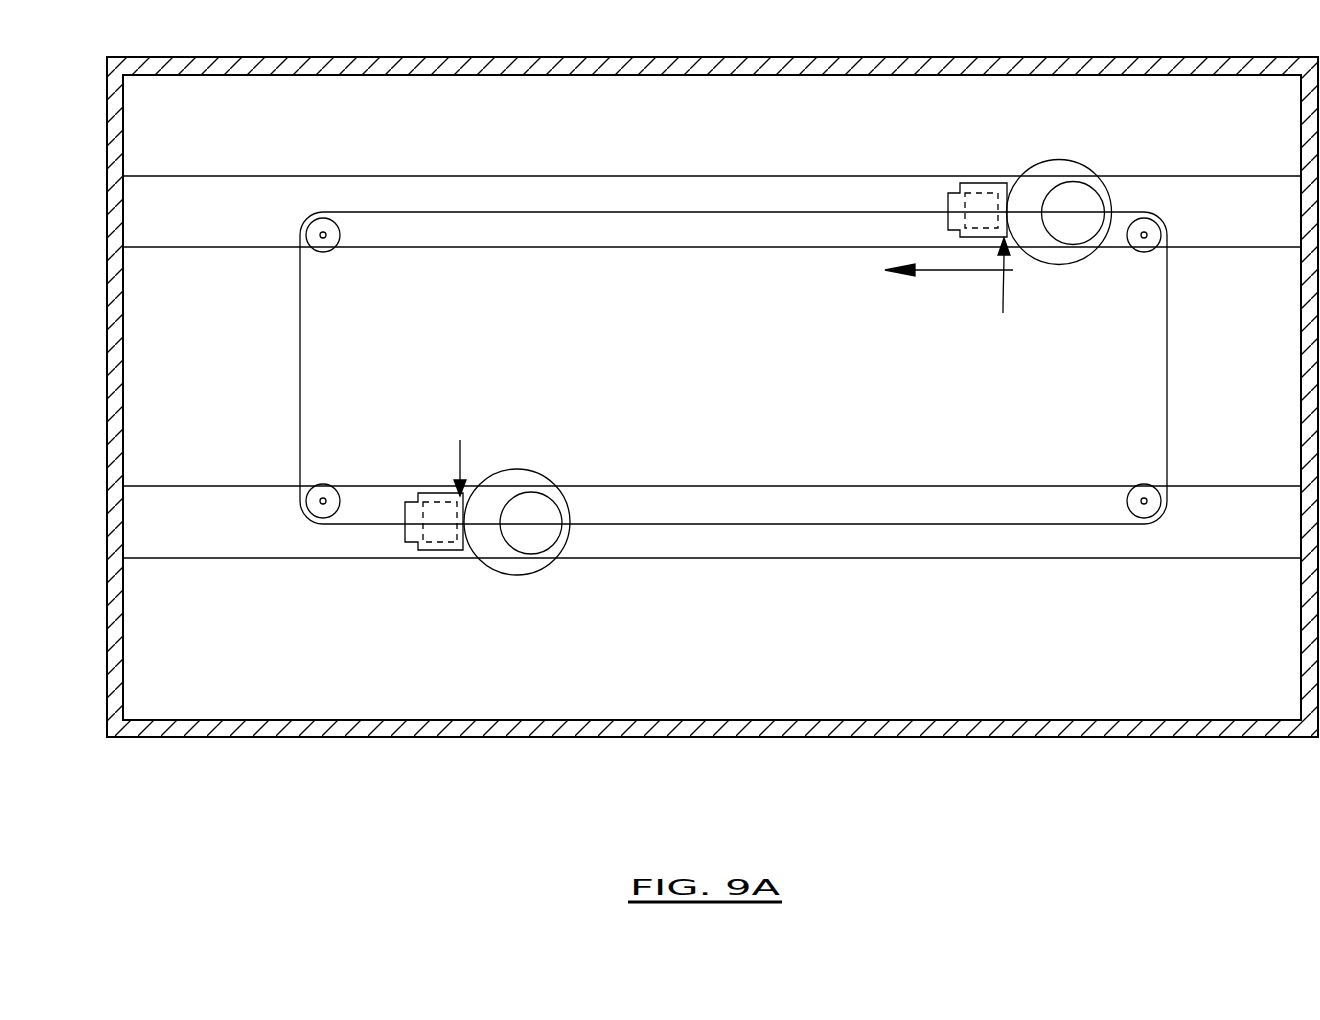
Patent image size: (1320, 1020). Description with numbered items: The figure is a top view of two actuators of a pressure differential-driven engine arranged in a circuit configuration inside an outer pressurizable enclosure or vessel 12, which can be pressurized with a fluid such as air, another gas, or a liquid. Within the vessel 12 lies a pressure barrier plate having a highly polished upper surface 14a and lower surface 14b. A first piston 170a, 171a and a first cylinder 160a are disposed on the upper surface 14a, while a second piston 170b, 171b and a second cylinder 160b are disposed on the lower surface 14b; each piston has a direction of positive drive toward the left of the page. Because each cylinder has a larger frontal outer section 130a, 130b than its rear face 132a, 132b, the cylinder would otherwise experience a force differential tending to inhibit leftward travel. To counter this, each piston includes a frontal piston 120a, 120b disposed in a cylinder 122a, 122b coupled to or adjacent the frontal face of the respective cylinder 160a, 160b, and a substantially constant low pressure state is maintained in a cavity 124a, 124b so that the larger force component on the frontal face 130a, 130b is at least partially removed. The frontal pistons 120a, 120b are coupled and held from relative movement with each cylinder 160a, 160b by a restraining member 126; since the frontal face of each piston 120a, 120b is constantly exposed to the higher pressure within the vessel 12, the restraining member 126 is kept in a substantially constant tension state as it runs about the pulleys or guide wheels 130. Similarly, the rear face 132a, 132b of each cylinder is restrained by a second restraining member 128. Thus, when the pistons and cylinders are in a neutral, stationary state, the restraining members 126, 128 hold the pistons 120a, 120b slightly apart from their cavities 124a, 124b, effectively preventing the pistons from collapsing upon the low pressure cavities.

The pressurizable enclosure or vessel 12 is at (200, 737).
The upper surface of the pressure barrier plate 14a is at (160, 176).
The lower surface of the pressure barrier plate 14b is at (148, 486).
The first frontal piston 120a is at (917, 216).
The second frontal piston 120b is at (387, 526).
The first cylinder of the frontal piston 122a is at (974, 183).
The second cylinder of the frontal piston 122b is at (422, 493).
The first low pressure cavity 124a is at (990, 290).
The second low pressure cavity 124b is at (484, 450).
The restraining member 126 is at (662, 212).
The restraining member 128 is at (773, 524).
The pulleys or guide wheels 130 is at (335, 249).
The frontal outer section of the first cylinder 130a is at (1114, 192).
The frontal outer section of the second cylinder 130b is at (534, 568).
The rear face of the first cylinder 132a is at (1112, 192).
The rear face of the second cylinder 132b is at (572, 540).
The first cylinder 160a is at (1081, 250).
The second cylinder 160b is at (559, 519).
The first piston 170a is at (1024, 287).
The first motor hub 171a is at (1024, 287).
The second piston 170b is at (602, 487).
The second motor hub 171b is at (533, 522).